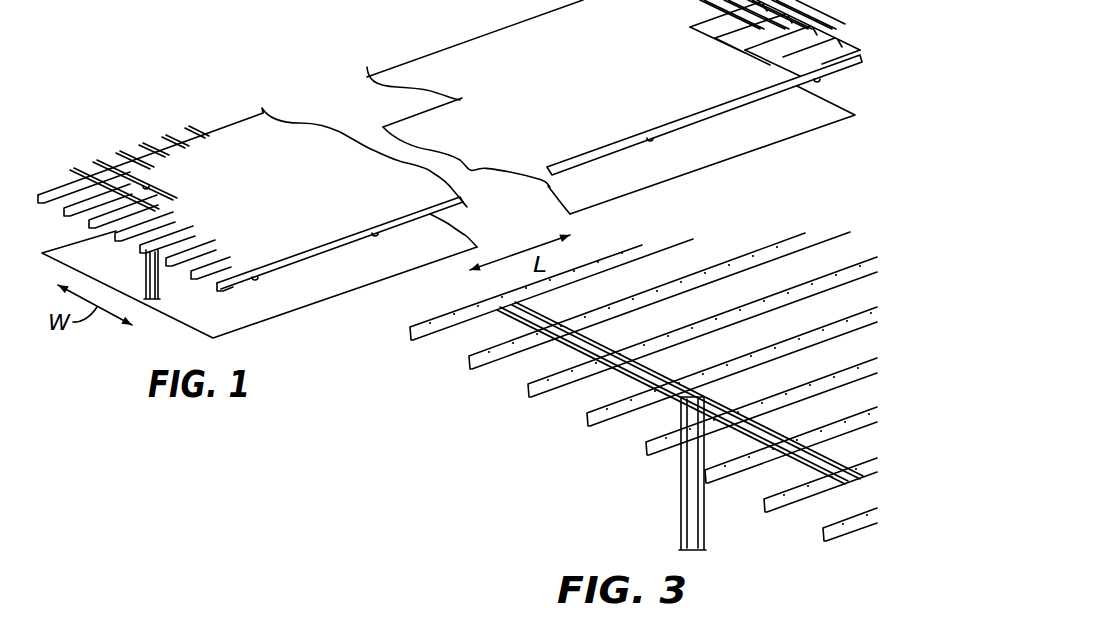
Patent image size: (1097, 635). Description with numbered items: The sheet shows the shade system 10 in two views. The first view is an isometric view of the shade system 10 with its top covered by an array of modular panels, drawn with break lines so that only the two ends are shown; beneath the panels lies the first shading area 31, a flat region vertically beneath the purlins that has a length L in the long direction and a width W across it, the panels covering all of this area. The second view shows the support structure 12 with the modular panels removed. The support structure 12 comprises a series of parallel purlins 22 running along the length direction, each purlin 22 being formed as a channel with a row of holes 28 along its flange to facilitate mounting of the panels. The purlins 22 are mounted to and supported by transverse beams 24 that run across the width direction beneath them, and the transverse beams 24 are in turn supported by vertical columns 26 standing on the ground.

In FIG. 1, the shade system 10 is at (150, 118).
In FIG. 3, the support structure 12 is at (495, 455).
In FIG. 3, the purlins 22 is at (437, 333).
In FIG. 3, the transverse beams 24 is at (627, 374).
In FIG. 1, the vertical columns 26 is at (152, 274).
In FIG. 3, the vertical columns 26 is at (681, 523).
In FIG. 3, the holes 28 is at (636, 402).
In FIG. 1, the first shading area 31 is at (263, 308).